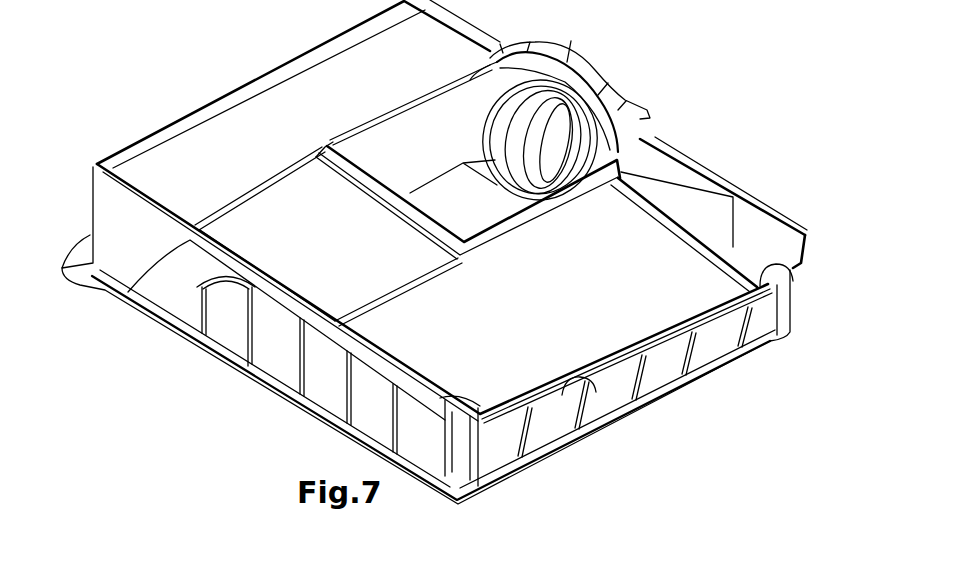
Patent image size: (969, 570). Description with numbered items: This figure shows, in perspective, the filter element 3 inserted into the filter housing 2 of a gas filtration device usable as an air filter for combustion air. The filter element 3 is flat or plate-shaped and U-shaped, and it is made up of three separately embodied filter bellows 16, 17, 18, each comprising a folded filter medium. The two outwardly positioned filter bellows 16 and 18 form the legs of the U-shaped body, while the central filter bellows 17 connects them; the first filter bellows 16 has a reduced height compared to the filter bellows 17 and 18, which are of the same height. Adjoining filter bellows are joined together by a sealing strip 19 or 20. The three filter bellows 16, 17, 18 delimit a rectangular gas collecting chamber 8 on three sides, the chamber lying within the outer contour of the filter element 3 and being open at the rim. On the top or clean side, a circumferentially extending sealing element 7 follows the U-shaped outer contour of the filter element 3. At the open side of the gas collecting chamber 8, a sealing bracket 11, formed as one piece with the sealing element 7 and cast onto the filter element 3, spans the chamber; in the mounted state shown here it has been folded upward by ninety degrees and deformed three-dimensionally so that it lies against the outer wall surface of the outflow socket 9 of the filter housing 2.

The filter housing 2 is at (555, 428).
The filter element 3 is at (643, 320).
The sealing element 7 is at (683, 228).
The gas collecting chamber 8 is at (467, 215).
The outflow socket 9 is at (577, 55).
The sealing bracket 11 is at (593, 115).
The filter bellows 16 is at (312, 133).
The filter bellows 17 is at (340, 262).
The filter bellows 18 is at (551, 335).
The sealing strip 19 is at (251, 191).
The sealing strip 20 is at (390, 290).